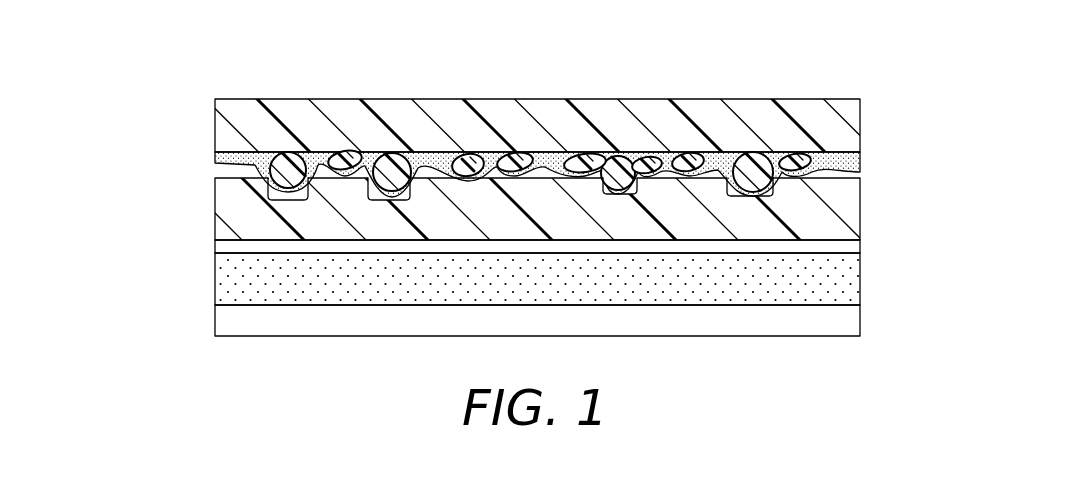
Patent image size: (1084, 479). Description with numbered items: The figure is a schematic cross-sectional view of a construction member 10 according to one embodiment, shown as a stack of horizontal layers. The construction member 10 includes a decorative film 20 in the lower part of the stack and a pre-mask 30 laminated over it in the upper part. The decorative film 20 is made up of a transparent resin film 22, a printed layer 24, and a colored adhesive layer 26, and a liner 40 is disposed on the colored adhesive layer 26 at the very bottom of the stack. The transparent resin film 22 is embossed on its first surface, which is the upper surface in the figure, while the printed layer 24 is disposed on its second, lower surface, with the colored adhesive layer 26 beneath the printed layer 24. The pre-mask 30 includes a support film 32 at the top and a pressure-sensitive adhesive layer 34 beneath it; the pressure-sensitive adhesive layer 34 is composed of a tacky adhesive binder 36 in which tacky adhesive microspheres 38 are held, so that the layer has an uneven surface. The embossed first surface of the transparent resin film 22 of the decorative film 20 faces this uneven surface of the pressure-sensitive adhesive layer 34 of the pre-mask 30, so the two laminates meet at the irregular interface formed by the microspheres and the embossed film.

The construction member 10 is at (864, 80).
The decorative film 20 is at (212, 307).
The transparent resin film 22 is at (870, 242).
The printed layer 24 is at (853, 247).
The colored adhesive layer 26 is at (852, 279).
The pre-mask 30 is at (117, 193).
The support film 32 is at (848, 118).
The pressure-sensitive adhesive layer 34 is at (198, 195).
The tacky adhesive binder 36 is at (860, 156).
The tacky adhesive microspheres 38 is at (748, 165).
The liner 40 is at (850, 321).